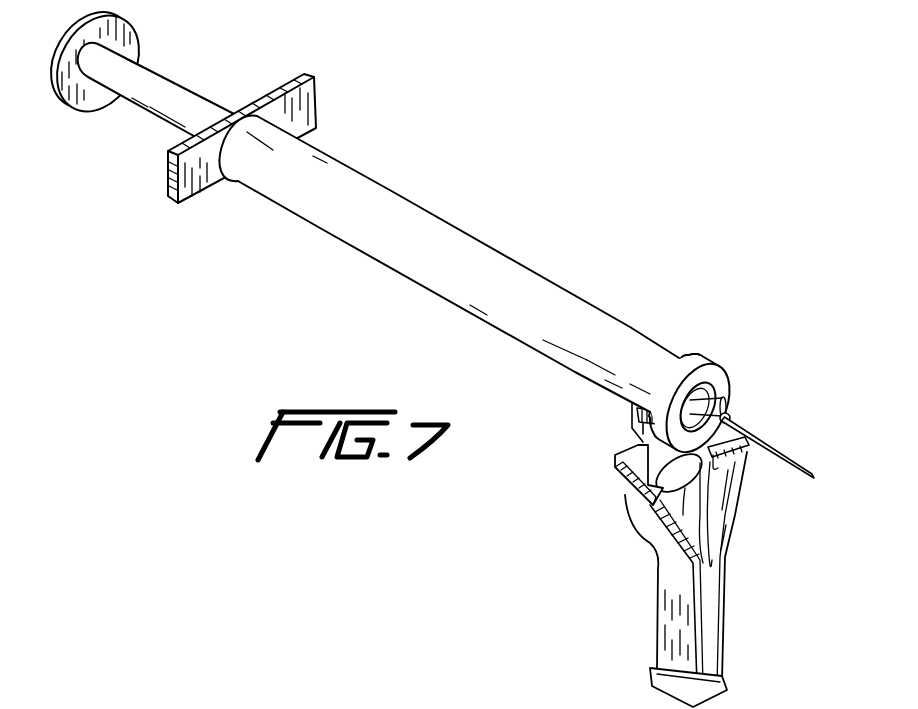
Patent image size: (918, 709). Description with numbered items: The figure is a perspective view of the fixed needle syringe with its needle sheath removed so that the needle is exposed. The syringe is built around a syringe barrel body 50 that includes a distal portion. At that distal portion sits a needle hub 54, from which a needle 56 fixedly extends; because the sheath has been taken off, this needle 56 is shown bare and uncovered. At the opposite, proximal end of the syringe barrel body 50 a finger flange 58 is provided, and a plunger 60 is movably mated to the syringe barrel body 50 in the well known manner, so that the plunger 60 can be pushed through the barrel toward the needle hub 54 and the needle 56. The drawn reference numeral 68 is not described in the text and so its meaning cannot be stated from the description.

The syringe barrel body 50 is at (490, 247).
The needle hub 54 is at (708, 410).
The needle 56 is at (780, 455).
The finger flange 58 is at (178, 207).
The plunger 60 is at (128, 98).
The hub collar 68 is at (701, 357).